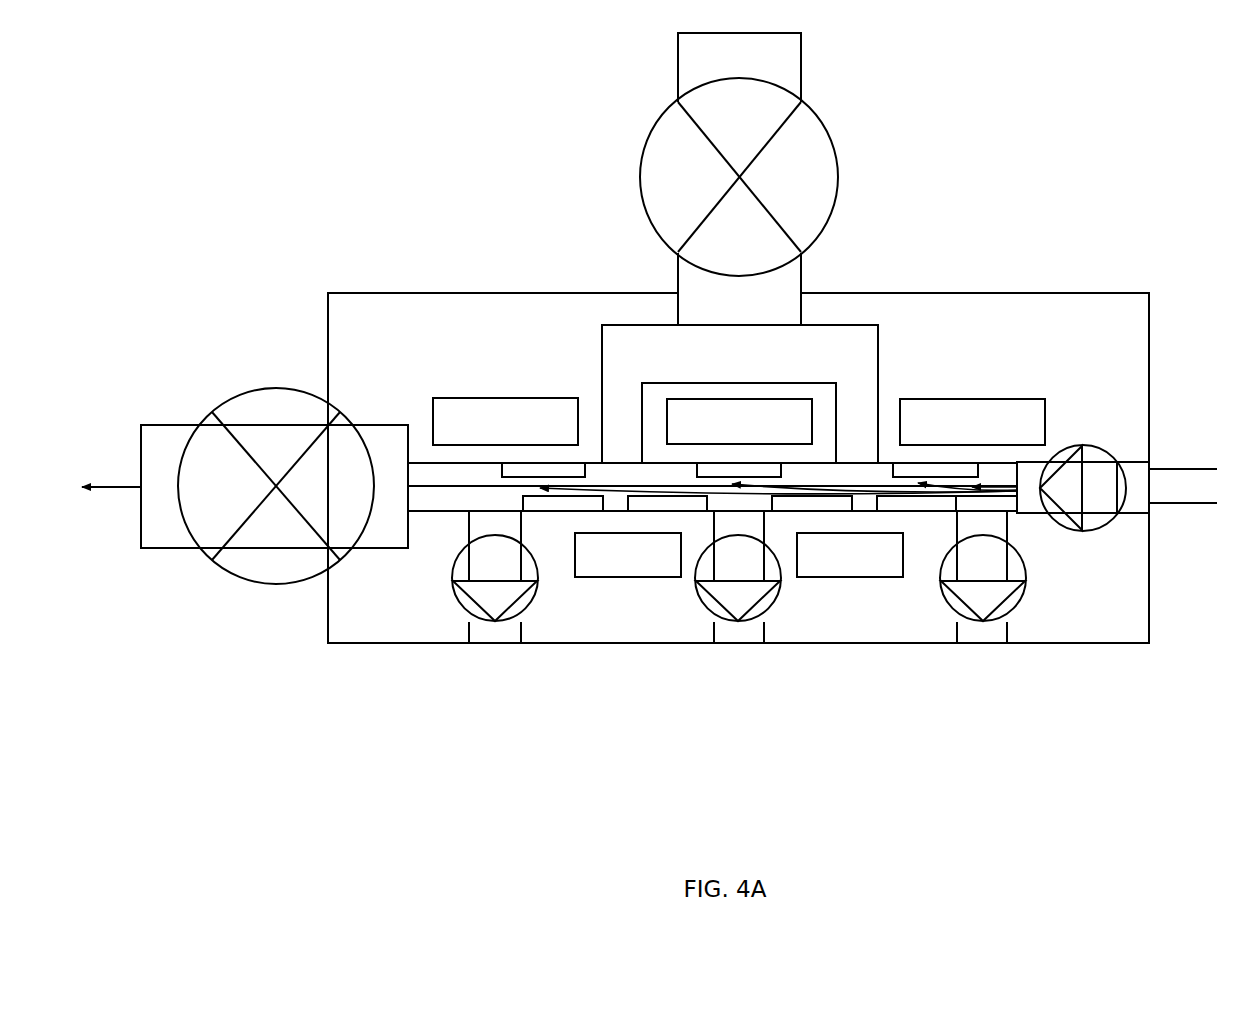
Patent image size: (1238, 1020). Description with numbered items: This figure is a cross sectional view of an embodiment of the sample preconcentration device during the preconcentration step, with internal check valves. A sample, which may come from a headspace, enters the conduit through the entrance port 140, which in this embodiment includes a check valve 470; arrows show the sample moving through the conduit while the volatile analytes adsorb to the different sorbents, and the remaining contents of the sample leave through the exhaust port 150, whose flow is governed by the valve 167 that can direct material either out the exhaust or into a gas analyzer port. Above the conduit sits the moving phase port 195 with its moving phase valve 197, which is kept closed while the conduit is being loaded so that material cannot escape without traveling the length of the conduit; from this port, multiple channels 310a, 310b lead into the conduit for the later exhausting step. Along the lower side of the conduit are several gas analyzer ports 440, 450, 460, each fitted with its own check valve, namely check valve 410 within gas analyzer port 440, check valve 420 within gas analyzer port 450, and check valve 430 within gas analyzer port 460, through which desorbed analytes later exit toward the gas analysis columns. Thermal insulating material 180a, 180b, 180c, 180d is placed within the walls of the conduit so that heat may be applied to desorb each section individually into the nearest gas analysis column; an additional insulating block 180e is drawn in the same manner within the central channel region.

The entrance port 140 is at (1133, 462).
The exhaust port 150 is at (389, 425).
The valve 167 is at (263, 389).
The thermal insulating material 180a is at (505, 421).
The thermal insulating material 180b is at (972, 422).
The thermal insulating material 180c is at (628, 555).
The thermal insulating material 180d is at (850, 555).
The sensor 180e is at (739, 423).
The moving phase port 195 is at (677, 270).
The moving phase valve 197 is at (836, 147).
The channel 310a is at (612, 386).
The channel 310b is at (872, 378).
The check valve 410 is at (538, 597).
The check valve 420 is at (782, 597).
The check valve 430 is at (1026, 597).
The gas analyzer port 440 is at (492, 644).
The gas analyzer port 450 is at (737, 644).
The gas analyzer port 460 is at (981, 644).
The check valve 470 is at (1097, 445).